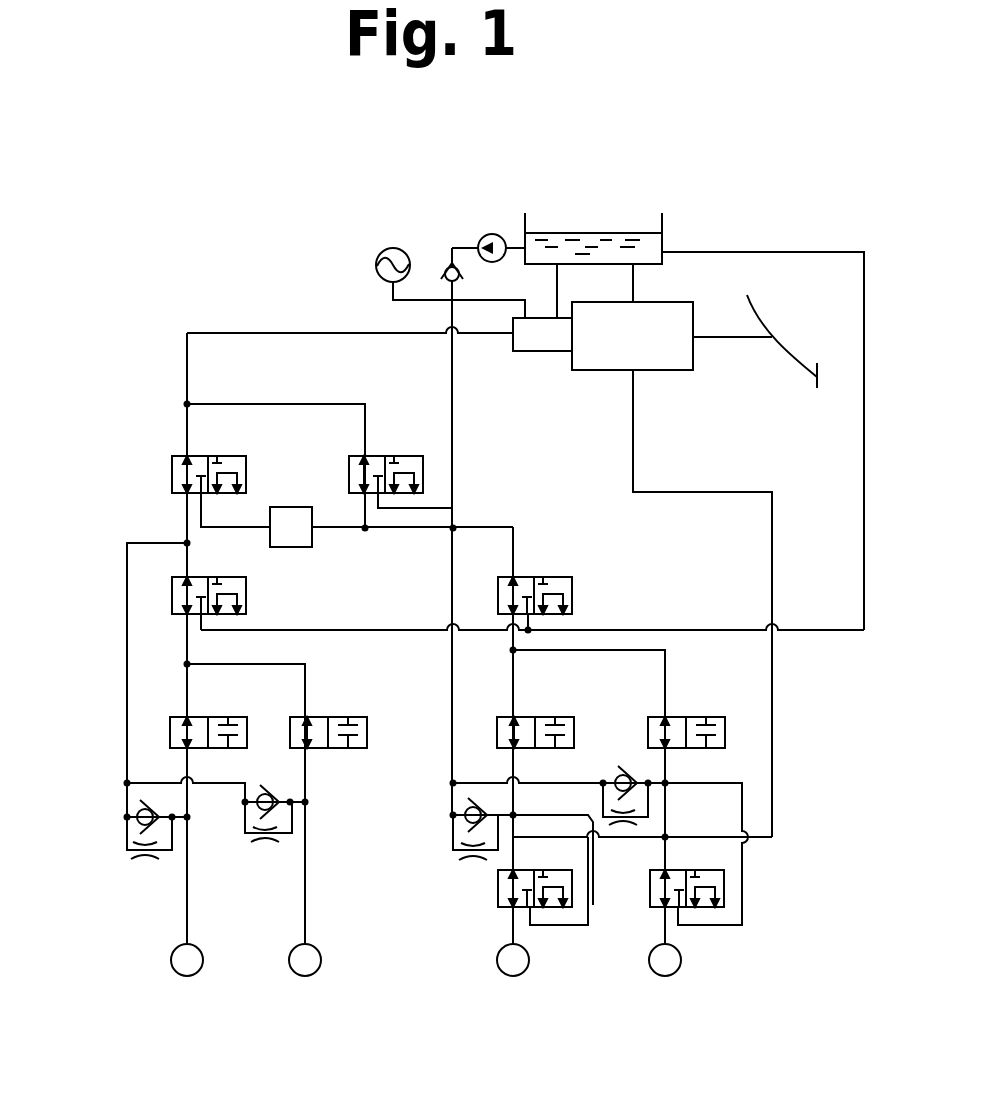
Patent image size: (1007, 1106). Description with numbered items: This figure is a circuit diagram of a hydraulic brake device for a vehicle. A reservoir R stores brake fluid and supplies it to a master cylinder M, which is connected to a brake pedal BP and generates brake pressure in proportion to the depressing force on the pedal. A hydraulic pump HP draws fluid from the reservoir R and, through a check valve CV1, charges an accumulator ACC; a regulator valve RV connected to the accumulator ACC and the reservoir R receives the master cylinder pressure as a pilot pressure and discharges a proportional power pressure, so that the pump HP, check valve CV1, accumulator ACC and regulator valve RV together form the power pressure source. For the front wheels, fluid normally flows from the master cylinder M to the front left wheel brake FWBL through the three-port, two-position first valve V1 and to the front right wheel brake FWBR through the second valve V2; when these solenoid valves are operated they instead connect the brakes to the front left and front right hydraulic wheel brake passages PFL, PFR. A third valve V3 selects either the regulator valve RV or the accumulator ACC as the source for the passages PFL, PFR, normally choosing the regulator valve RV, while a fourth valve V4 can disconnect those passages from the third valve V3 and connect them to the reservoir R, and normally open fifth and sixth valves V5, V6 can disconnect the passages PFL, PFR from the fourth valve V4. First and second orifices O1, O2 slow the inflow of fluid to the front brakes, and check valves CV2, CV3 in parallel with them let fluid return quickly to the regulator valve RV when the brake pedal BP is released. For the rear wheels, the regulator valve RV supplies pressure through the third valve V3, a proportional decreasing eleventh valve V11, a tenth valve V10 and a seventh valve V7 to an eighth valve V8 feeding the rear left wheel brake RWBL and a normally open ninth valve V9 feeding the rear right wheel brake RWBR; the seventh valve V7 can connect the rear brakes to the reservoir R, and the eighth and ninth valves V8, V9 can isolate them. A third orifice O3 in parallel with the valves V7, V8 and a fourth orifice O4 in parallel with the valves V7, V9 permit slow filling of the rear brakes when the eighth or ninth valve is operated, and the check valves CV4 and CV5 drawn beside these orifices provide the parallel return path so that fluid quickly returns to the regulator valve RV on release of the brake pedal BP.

The accumulator ACC is at (377, 250).
The check valve CV1 is at (450, 265).
The hydraulic pump HP is at (492, 233).
The reservoir R is at (667, 222).
The regulator valve RV is at (532, 351).
The master cylinder M is at (652, 363).
The brake pedal BP is at (783, 358).
The tenth valve V10 is at (245, 473).
The third valve V3 is at (375, 455).
The eleventh valve V11 is at (313, 540).
The seventh valve V7 is at (246, 597).
The fourth valve V4 is at (575, 592).
The eighth valve V8 is at (220, 715).
The ninth valve V9 is at (333, 713).
The fifth valve V5 is at (547, 715).
The sixth valve V6 is at (678, 715).
The first valve V1 is at (548, 907).
The second valve V2 is at (707, 907).
The check valve CV4 is at (140, 803).
The check valve CV5 is at (279, 798).
The check valve CV2 is at (457, 836).
The check valve CV3 is at (619, 767).
The first orifice O1 is at (473, 867).
The second orifice O2 is at (643, 824).
The third orifice O3 is at (148, 865).
The fourth orifice O4 is at (268, 845).
The front left hydraulic wheel brake passage PFL is at (593, 905).
The front right hydraulic wheel brake passage PFR is at (742, 907).
The rear left wheel brake RWBL is at (176, 975).
The rear right wheel brake RWBR is at (296, 975).
The front left wheel brake FWBL is at (503, 975).
The front right wheel brake FWBR is at (673, 975).